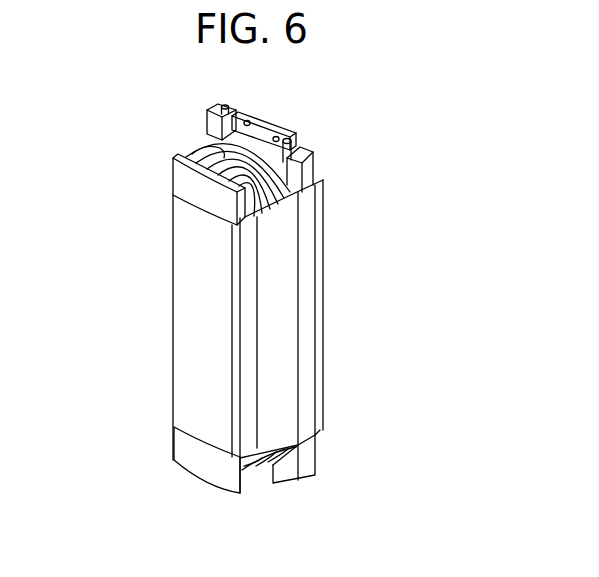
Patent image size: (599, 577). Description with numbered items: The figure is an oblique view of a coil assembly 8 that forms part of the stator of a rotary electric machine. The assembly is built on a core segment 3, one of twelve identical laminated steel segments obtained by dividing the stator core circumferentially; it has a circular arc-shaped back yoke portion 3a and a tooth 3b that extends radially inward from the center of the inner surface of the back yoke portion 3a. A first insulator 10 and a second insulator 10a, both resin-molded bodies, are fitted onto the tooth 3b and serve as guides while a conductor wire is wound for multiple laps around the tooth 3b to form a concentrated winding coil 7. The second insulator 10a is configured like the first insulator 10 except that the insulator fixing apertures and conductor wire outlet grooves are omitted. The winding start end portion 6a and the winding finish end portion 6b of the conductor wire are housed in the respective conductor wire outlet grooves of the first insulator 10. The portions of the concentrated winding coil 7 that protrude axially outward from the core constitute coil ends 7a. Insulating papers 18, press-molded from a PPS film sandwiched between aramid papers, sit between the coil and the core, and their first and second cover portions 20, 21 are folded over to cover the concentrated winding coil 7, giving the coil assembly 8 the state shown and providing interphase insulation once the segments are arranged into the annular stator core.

The coil assembly 8 is at (84, 72).
The core segment 3 is at (178, 255).
The back yoke portion 3a is at (312, 217).
The tooth 3b is at (197, 308).
The winding start end portion 6a is at (223, 100).
The winding finish end portion 6b is at (290, 138).
The concentrated winding coil 7 is at (200, 140).
The coil end 7a is at (197, 152).
The first insulator 10 is at (317, 152).
The second insulator 10a is at (317, 460).
The insulating paper 18 is at (323, 263).
The first cover portion 20 is at (252, 337).
The second cover portion 21 is at (285, 360).